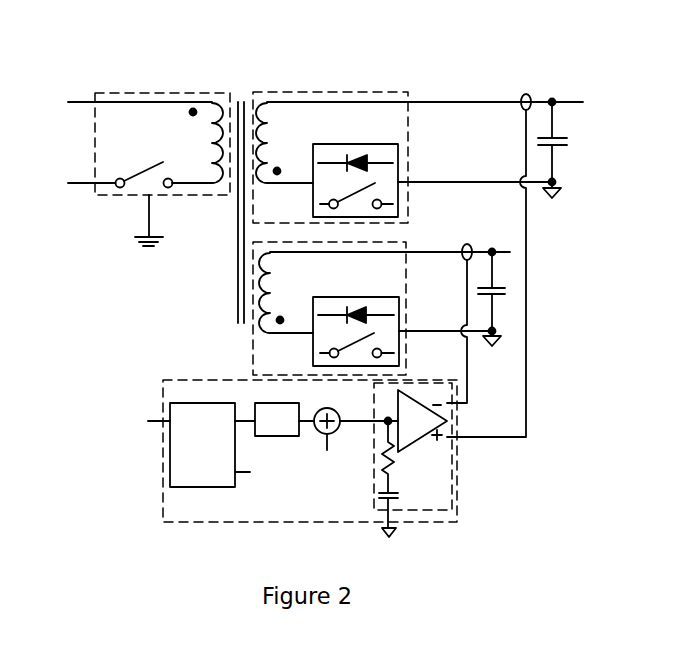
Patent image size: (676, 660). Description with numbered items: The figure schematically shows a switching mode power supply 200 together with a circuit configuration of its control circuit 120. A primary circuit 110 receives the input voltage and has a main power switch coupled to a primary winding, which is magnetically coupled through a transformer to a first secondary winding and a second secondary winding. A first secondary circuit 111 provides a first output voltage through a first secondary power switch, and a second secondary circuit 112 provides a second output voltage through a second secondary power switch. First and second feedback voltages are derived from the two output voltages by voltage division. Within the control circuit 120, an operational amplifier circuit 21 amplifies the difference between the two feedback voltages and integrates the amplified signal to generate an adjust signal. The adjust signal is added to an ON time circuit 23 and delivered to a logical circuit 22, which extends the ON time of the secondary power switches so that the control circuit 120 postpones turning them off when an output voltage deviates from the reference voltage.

The switching mode power supply 200 is at (107, 62).
The primary circuit 110 is at (172, 88).
The first secondary circuit 111 is at (411, 119).
The second secondary circuit 112 is at (406, 279).
The control circuit 120 is at (211, 516).
The operational amplifier circuit 21 is at (447, 500).
The logical circuit 22 is at (202, 445).
The ON time circuit 23 is at (277, 419).